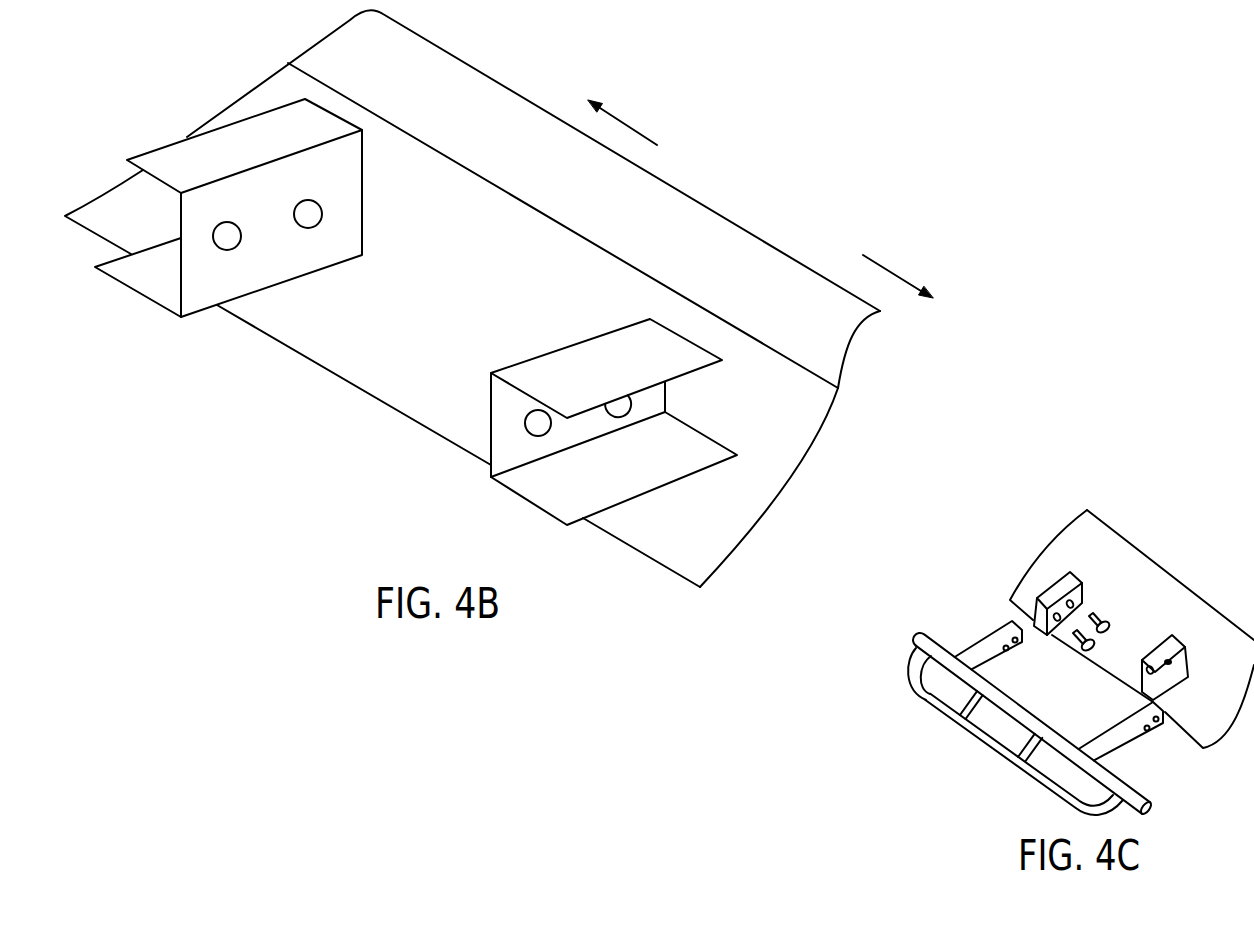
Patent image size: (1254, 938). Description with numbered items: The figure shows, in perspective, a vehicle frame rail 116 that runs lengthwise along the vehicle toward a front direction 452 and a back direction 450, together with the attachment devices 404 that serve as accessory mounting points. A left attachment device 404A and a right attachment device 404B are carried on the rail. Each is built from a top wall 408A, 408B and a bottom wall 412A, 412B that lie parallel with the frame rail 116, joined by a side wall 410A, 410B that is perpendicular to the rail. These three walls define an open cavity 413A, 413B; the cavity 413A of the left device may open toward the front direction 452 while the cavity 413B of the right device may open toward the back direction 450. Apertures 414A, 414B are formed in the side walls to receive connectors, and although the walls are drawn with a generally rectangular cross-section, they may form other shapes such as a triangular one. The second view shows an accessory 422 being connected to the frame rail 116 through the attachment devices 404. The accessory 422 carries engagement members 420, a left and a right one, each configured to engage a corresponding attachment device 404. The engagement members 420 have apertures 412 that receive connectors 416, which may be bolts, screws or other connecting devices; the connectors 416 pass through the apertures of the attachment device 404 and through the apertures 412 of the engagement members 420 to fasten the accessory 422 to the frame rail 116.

In FIG. 4B, the frame rail 116 is at (676, 205).
In FIG. 4C, the frame rail 116 is at (1087, 535).
In FIG. 4B, the left attachment device 404A is at (247, 214).
In FIG. 4B, the top wall 408A is at (172, 160).
In FIG. 4B, the side wall 410A is at (203, 287).
In FIG. 4B, the bottom wall 412A is at (143, 300).
In FIG. 4B, the open cavity 413A is at (125, 267).
In FIG. 4B, the apertures 414A is at (236, 247).
In FIG. 4B, the right attachment device 404B is at (616, 389).
In FIG. 4B, the top wall 408B is at (532, 368).
In FIG. 4B, the side wall 410B is at (500, 412).
In FIG. 4B, the bottom wall 412B is at (598, 503).
In FIG. 4B, the open cavity 413B is at (546, 484).
In FIG. 4B, the apertures 414B is at (550, 427).
In FIG. 4B, the back direction 450 is at (883, 267).
In FIG. 4B, the front direction 452 is at (632, 128).
In FIG. 4C, the attachment device 404 is at (1068, 583).
In FIG. 4C, the apertures 412 is at (1013, 647).
In FIG. 4C, the connectors 416 is at (1076, 632).
In FIG. 4C, the engagement members 420 is at (1007, 636).
In FIG. 4C, the accessory 422 is at (910, 663).